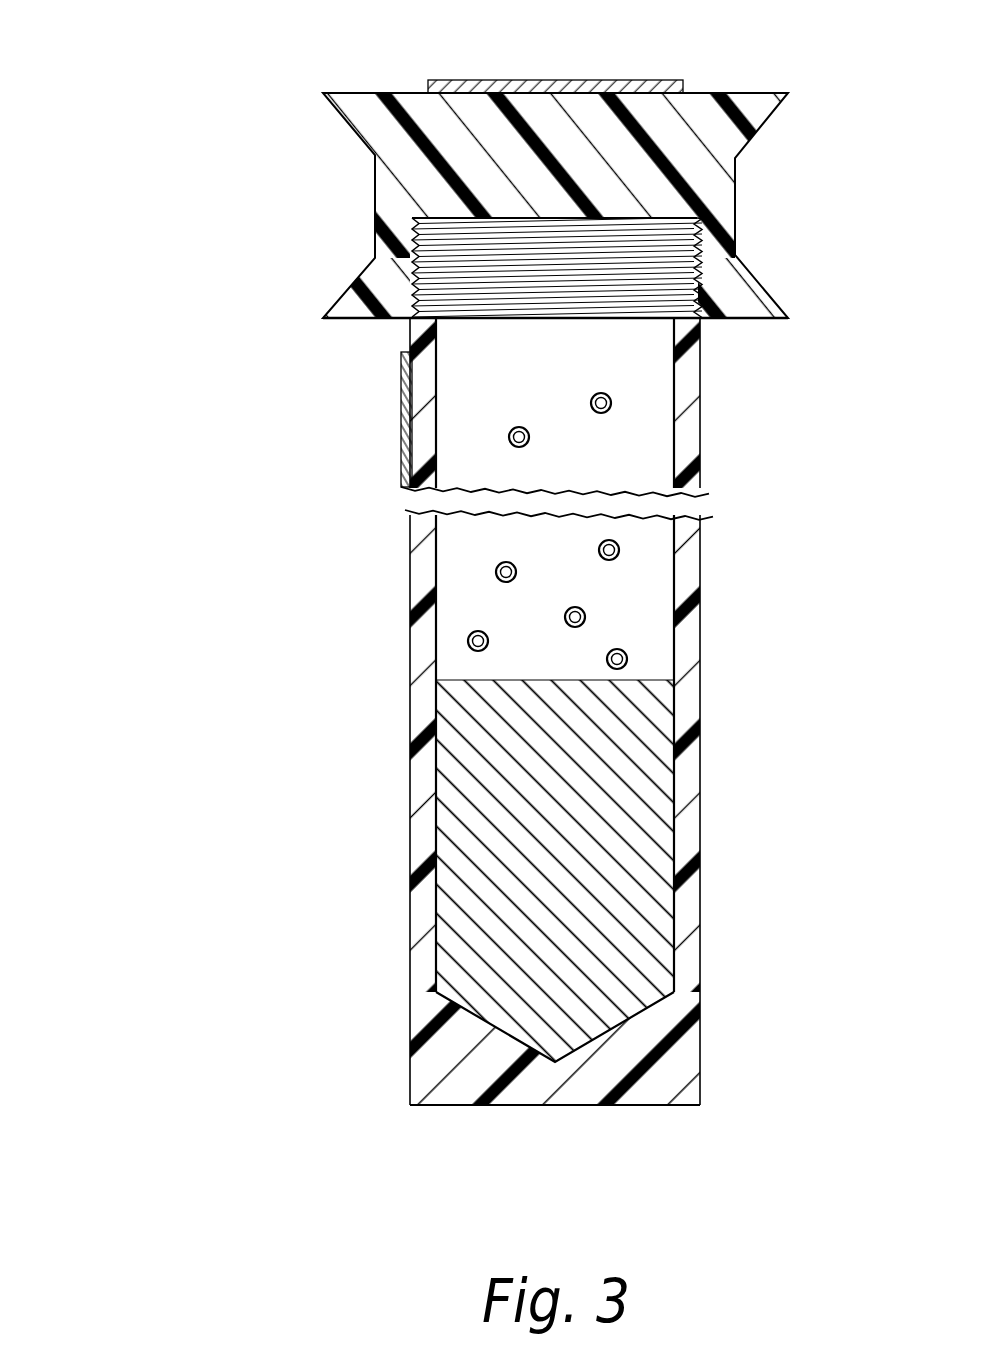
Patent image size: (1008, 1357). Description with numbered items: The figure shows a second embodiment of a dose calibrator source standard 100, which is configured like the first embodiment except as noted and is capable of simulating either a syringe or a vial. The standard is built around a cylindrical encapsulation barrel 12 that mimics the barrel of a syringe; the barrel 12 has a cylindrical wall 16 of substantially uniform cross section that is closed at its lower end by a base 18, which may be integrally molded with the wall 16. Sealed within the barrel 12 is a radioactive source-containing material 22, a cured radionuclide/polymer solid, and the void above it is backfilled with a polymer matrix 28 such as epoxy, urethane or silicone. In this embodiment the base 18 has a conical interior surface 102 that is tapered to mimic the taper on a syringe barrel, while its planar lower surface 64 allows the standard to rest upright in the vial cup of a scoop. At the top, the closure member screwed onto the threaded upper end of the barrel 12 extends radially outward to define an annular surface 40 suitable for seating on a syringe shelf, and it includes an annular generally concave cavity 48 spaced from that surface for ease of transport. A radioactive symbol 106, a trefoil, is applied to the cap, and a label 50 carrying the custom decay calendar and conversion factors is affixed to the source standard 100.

The source standard 100 is at (463, 598).
The encapsulation barrel 12 is at (549, 707).
The cylindrical wall 16 is at (407, 712).
The base 18 is at (617, 1058).
The radioactive source-containing material 22 is at (493, 835).
The polymer matrix 28 is at (647, 576).
The annular surface 40 is at (363, 320).
The annular generally concave cavity 48 is at (493, 177).
The label 50 is at (400, 432).
The planar lower surface 64 is at (518, 1107).
The conical interior surface 102 is at (502, 1043).
The radioactive symbol 106 is at (538, 80).